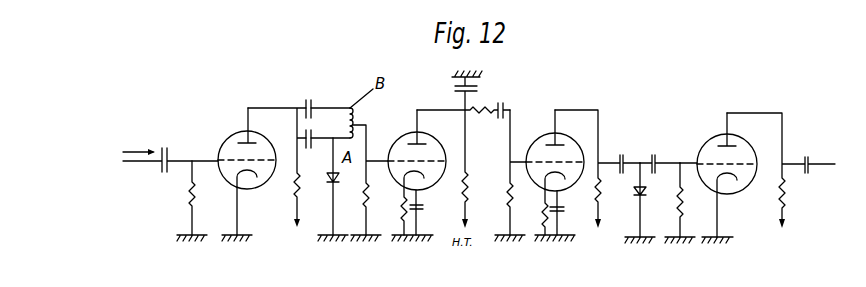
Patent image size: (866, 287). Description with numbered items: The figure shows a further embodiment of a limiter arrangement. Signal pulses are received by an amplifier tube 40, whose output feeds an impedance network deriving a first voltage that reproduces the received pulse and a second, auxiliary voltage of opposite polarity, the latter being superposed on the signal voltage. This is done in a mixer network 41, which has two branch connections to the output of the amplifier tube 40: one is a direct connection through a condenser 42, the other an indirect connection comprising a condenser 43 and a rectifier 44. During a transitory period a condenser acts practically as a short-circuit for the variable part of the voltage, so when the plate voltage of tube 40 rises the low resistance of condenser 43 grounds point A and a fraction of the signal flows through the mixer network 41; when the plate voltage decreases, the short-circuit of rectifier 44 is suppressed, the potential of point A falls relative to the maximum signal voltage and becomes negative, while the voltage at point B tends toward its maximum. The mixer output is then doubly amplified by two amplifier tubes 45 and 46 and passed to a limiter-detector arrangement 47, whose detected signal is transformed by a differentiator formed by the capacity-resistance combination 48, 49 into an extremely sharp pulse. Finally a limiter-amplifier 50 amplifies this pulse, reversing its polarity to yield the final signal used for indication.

The amplifier tube 40 is at (228, 132).
The mixer network 41 is at (353, 118).
The condenser 42 is at (307, 100).
The condenser 43 is at (305, 132).
The rectifier 44 is at (328, 178).
The amplifier tube 45 is at (403, 178).
The amplifier tube 46 is at (542, 179).
The limiter-detector arrangement 47 is at (638, 166).
The capacity of differentiator 48 is at (657, 157).
The resistance of differentiator 49 is at (678, 198).
The limiter-amplifier 50 is at (733, 182).